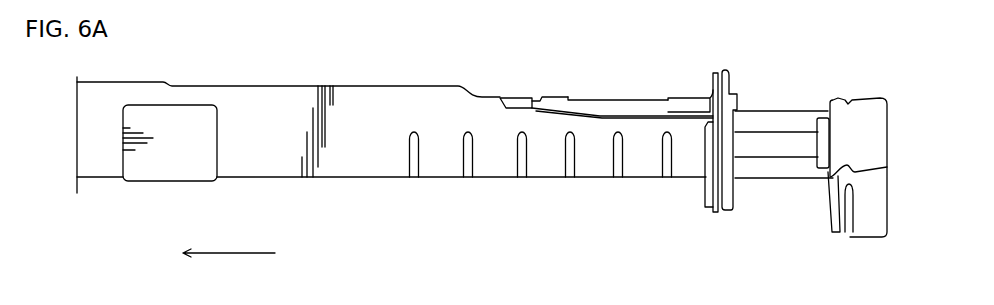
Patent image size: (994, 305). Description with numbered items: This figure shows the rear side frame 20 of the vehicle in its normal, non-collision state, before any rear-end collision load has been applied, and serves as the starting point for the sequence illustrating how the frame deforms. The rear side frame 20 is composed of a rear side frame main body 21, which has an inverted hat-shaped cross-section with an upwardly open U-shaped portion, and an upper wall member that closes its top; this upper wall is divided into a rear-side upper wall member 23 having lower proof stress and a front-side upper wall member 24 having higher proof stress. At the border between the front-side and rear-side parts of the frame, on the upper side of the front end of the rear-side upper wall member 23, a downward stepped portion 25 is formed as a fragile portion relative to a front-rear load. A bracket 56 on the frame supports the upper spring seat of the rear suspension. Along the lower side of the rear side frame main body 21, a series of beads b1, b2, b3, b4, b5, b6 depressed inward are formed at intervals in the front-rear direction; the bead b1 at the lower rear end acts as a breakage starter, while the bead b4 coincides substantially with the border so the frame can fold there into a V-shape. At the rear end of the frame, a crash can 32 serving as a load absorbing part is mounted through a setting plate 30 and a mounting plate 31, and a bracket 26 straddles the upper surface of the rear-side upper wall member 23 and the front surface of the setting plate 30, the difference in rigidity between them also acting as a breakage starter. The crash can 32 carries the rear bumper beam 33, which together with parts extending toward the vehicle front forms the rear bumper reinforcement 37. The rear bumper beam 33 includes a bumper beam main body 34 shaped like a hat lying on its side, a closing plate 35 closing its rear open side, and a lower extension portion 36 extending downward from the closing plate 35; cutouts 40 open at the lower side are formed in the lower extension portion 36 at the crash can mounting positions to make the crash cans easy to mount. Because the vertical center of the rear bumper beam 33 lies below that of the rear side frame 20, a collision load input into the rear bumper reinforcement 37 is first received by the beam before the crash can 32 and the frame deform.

The rear side frame 20 is at (244, 68).
The rear side frame main body 21 is at (351, 167).
The rear-side upper wall member 23 is at (607, 98).
The front-side upper wall member 24 is at (511, 97).
The stepped portion 25 is at (538, 98).
The bracket 26 is at (683, 98).
The setting plate 30 is at (706, 192).
The mounting plate 31 is at (726, 190).
The crash can 32 is at (770, 111).
The rear bumper beam 33 is at (894, 153).
The bumper beam main body 34 is at (817, 140).
The closing plate 35 is at (862, 115).
The lower extension portion 36 is at (872, 236).
The rear bumper reinforcement 37 is at (764, 82).
The cutouts 40 is at (827, 212).
The bracket 56 is at (161, 175).
The bead b1 is at (662, 166).
The bead b2 is at (613, 166).
The bead b3 is at (565, 166).
The bead b4 is at (517, 166).
The bead b5 is at (463, 166).
The bead b6 is at (409, 166).